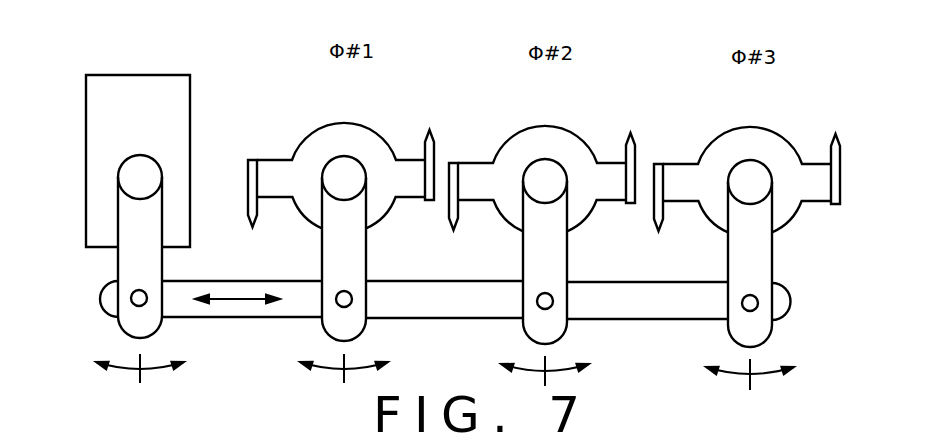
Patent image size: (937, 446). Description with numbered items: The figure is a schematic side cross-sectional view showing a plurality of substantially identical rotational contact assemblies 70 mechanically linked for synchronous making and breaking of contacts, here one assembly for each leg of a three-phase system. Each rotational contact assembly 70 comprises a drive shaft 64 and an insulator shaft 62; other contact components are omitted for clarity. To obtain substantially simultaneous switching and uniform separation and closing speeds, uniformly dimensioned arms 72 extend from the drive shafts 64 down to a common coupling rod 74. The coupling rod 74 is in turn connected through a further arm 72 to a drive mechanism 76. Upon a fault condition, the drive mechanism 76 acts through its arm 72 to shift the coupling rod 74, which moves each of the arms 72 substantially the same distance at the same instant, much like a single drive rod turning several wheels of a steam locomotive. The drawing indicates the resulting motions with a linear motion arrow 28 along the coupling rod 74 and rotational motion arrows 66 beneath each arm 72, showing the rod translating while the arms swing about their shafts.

The drive mechanism 76 is at (148, 75).
The coupling rod 74 is at (290, 281).
The linear displacement direction arrow 28 is at (231, 300).
The rotational contact assembly 70 is at (352, 122).
The insulator shaft 62 is at (413, 176).
The drive shaft 64 is at (327, 176).
The arm 72 is at (117, 262).
The rotational oscillation direction arrow 66 is at (128, 368).